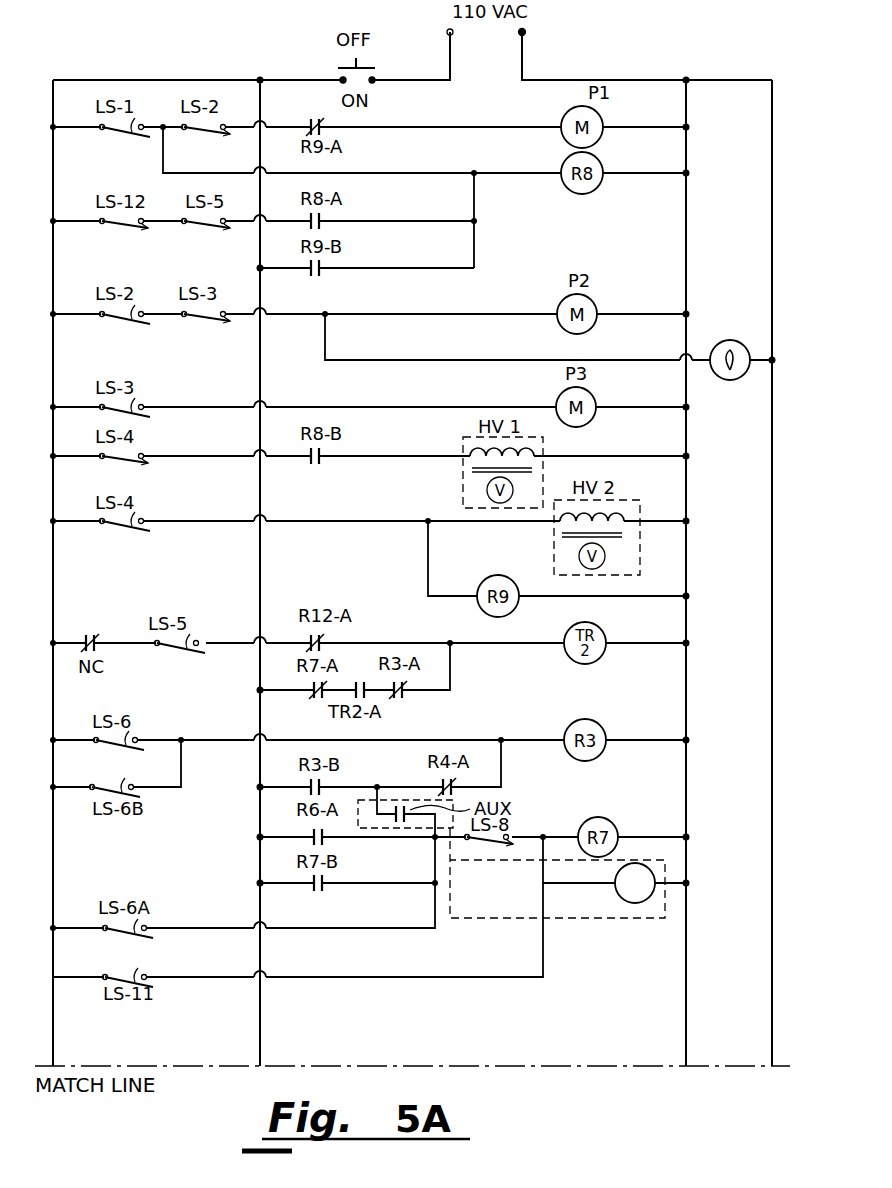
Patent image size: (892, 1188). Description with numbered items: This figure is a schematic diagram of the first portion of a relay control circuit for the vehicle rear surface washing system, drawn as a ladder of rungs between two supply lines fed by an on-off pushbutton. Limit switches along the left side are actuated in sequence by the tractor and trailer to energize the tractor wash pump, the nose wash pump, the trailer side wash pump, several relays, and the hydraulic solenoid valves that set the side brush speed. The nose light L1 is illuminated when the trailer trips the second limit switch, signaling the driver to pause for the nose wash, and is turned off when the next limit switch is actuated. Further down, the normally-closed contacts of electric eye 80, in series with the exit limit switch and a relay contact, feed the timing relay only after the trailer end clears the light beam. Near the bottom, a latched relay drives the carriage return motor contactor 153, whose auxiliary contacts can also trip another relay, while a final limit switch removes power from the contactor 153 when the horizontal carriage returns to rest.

The electric eye 80 is at (97, 634).
The carriage return motor contactor 153 is at (627, 903).
The nose light L1 is at (735, 380).